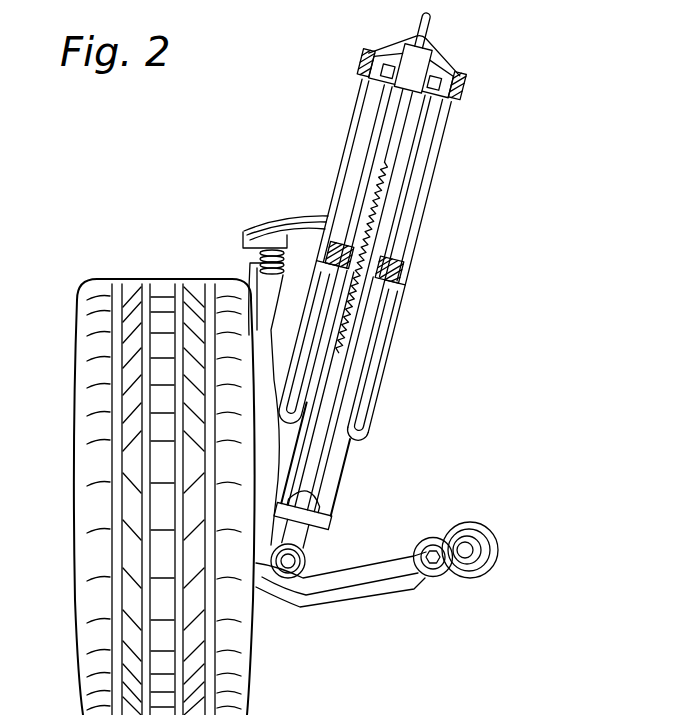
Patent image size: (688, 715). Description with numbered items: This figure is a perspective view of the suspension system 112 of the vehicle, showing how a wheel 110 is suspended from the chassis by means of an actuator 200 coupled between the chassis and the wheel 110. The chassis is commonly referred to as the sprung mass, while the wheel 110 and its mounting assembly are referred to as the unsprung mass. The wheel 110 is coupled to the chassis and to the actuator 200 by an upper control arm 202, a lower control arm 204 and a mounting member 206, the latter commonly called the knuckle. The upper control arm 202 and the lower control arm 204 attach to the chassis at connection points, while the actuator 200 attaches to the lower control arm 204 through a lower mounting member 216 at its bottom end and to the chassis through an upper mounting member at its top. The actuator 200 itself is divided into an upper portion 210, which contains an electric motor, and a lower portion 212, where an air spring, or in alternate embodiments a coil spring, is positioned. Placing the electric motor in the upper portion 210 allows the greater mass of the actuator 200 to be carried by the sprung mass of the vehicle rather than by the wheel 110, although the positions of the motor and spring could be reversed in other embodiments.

The wheel 110 is at (129, 291).
The suspension system 112 is at (505, 52).
The actuator 200 is at (352, 130).
The upper control arm 202 is at (292, 217).
The lower control arm 204 is at (377, 590).
The mounting member 206 is at (250, 260).
The upper portion 210 is at (483, 73).
The lower portion 212 is at (351, 549).
The lower mounting member 216 is at (288, 570).